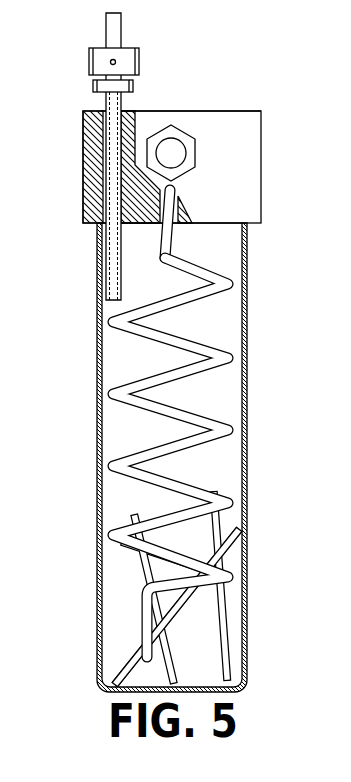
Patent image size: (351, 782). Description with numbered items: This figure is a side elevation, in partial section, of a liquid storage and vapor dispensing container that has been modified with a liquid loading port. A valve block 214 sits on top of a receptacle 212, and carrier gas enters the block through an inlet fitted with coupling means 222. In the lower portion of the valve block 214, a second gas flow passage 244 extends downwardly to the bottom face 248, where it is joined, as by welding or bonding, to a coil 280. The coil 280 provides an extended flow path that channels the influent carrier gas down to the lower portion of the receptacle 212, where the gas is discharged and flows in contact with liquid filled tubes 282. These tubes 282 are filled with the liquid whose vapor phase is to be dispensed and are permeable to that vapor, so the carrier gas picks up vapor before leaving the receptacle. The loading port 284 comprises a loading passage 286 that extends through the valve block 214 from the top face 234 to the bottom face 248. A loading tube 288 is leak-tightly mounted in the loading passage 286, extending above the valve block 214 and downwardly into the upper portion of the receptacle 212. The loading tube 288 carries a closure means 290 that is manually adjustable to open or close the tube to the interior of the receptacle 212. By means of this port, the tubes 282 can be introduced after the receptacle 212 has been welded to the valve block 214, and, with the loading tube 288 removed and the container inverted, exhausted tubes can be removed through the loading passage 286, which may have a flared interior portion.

The receptacle 212 is at (97, 500).
The valve block 214 is at (261, 162).
The coupling means 222 is at (180, 136).
The top face 234 is at (162, 111).
The second gas flow passage 244 is at (181, 226).
The bottom face 248 is at (148, 223).
The coil 280 is at (183, 310).
The liquid filled tubes 282 is at (207, 645).
The loading port 284 is at (96, 106).
The loading passage 286 is at (112, 140).
The loading tube 288 is at (121, 27).
The closure means 290 is at (103, 47).